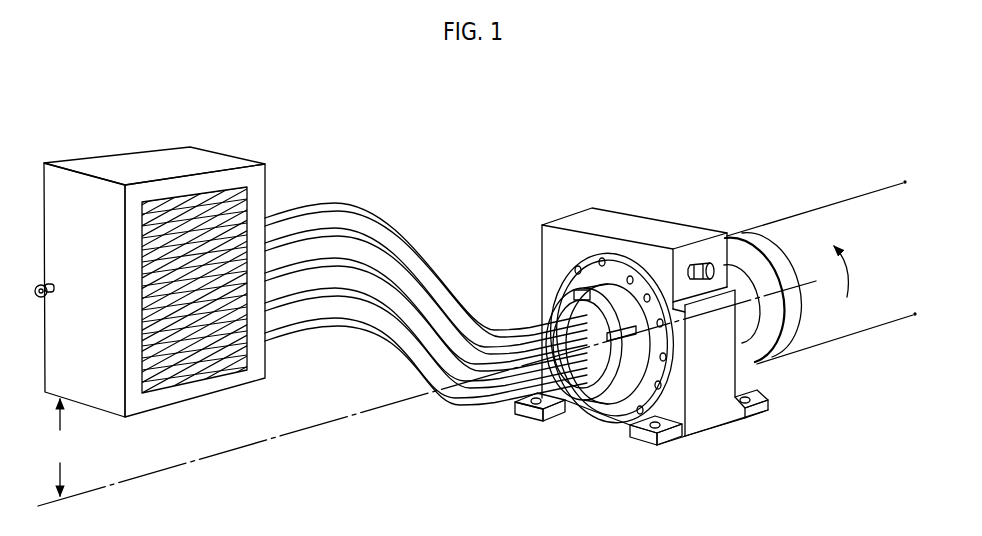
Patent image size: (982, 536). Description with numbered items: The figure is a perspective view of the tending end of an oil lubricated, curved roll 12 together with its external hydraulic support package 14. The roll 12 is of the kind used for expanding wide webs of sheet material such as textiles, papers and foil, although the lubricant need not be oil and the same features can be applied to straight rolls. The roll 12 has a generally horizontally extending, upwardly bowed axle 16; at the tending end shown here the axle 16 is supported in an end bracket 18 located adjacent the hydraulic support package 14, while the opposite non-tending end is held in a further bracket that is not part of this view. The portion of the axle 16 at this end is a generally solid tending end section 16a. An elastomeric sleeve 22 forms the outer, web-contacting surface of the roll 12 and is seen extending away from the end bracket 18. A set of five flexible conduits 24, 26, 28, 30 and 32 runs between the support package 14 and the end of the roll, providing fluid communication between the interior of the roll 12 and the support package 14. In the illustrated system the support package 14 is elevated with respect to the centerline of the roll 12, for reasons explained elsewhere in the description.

The curved roll 12 is at (734, 211).
The hydraulic support package 14 is at (228, 140).
The axle 16 is at (751, 316).
The tending end section 16a is at (620, 383).
The end bracket 18 is at (578, 222).
The elastomeric sleeve 22 is at (868, 195).
The flexible conduit 24 is at (457, 403).
The flexible conduit 26 is at (407, 342).
The flexible conduit 28 is at (388, 290).
The flexible conduit 30 is at (383, 252).
The flexible conduit 32 is at (380, 215).